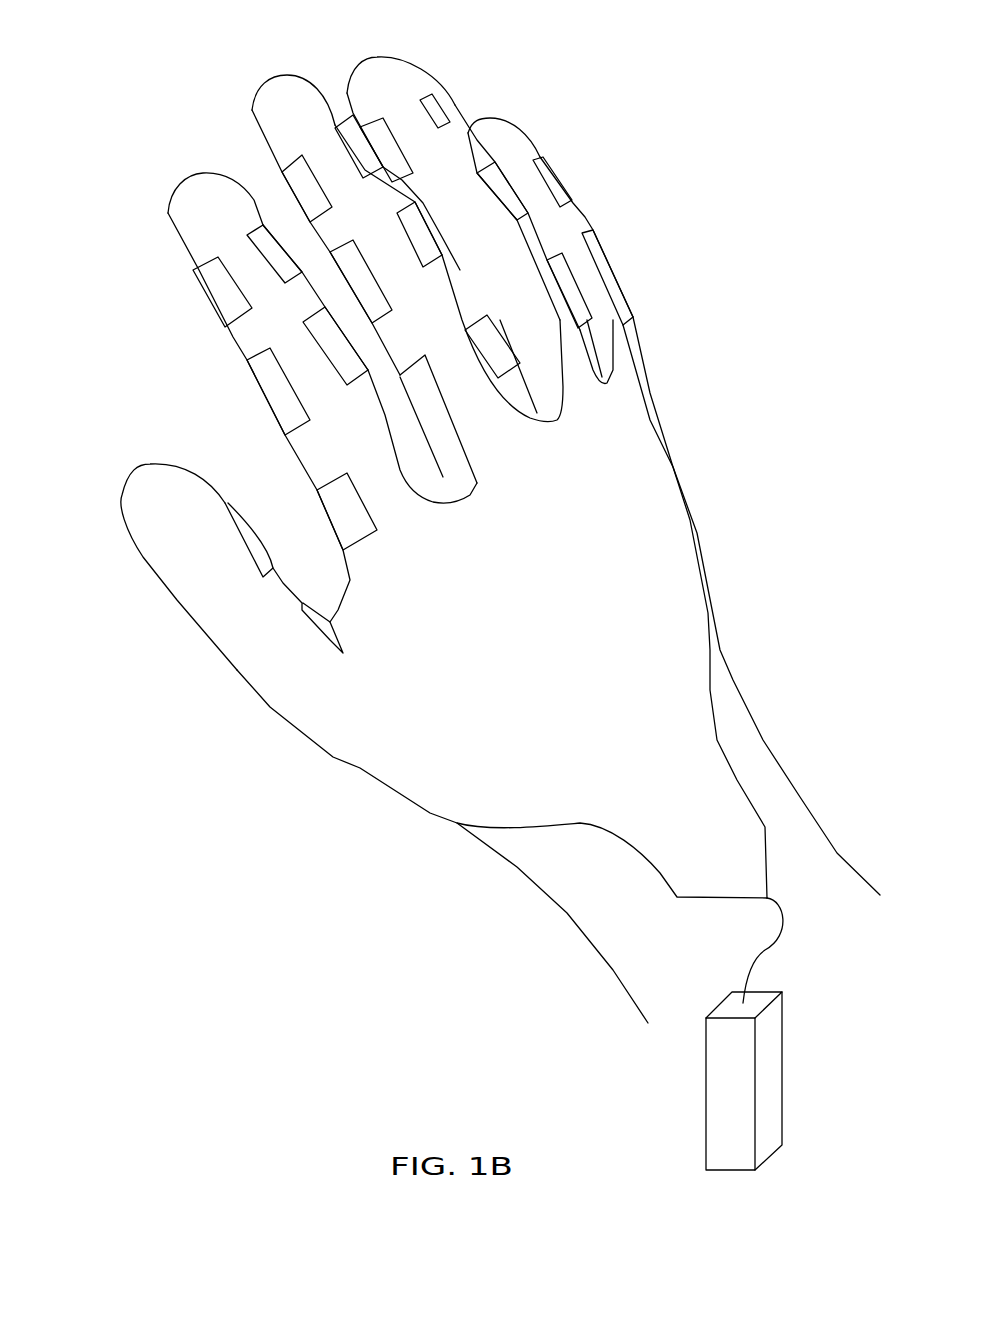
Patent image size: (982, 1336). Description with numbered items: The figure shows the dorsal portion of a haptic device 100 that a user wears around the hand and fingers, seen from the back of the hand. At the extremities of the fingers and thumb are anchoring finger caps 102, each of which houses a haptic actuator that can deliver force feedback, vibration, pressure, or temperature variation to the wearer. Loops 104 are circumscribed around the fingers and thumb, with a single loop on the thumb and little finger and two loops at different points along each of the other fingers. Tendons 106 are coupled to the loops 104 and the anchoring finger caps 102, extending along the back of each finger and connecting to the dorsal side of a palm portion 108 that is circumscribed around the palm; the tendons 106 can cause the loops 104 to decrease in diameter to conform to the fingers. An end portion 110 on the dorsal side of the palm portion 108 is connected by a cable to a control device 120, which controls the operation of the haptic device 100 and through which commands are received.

The haptic device 100 is at (96, 98).
The anchoring finger caps 102 is at (143, 466).
The loops 104 is at (333, 238).
The tendons 106 is at (212, 277).
The palm portion 108 is at (352, 752).
The end portion 110 is at (713, 890).
The control device 120 is at (768, 1073).